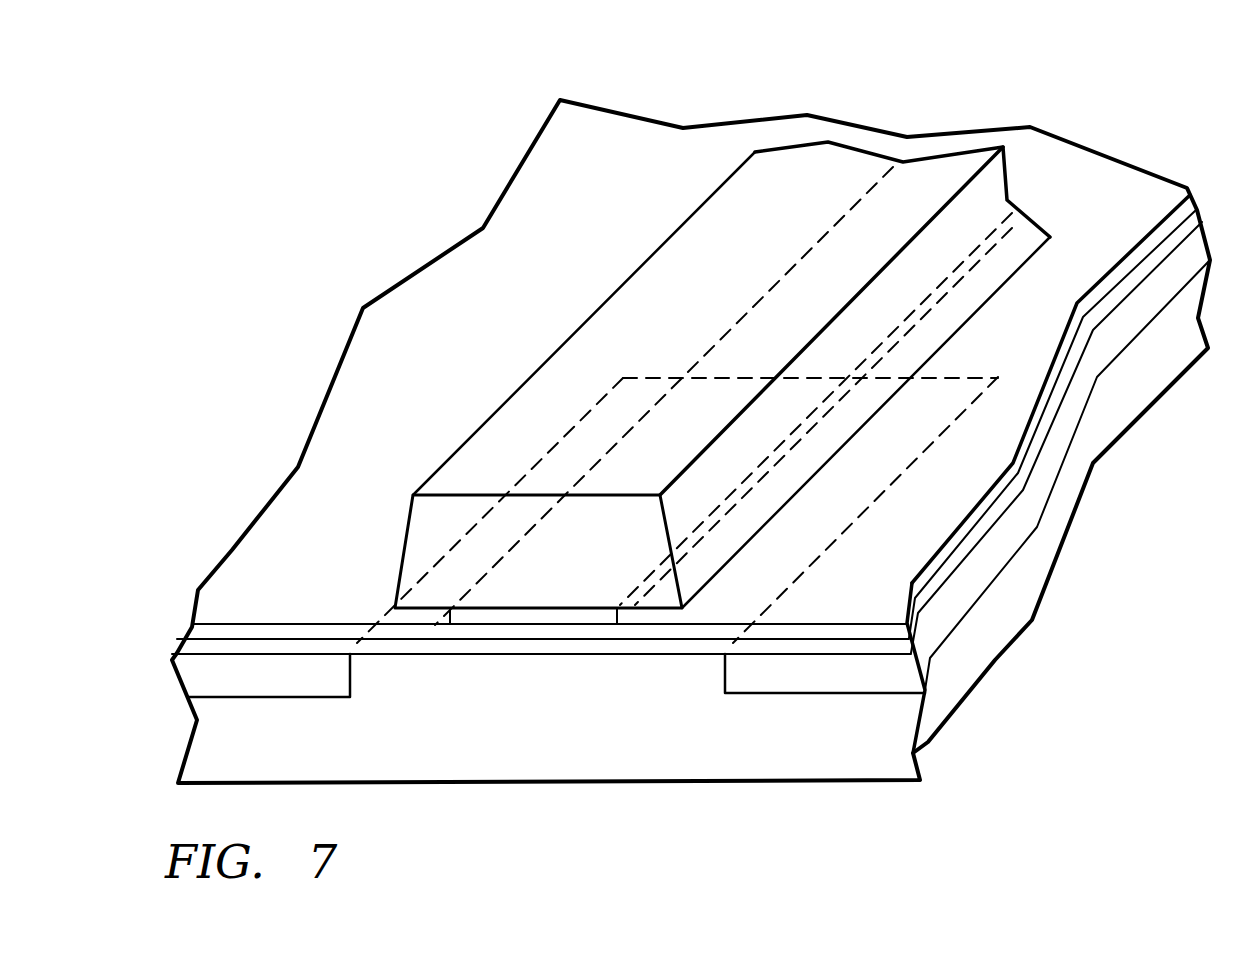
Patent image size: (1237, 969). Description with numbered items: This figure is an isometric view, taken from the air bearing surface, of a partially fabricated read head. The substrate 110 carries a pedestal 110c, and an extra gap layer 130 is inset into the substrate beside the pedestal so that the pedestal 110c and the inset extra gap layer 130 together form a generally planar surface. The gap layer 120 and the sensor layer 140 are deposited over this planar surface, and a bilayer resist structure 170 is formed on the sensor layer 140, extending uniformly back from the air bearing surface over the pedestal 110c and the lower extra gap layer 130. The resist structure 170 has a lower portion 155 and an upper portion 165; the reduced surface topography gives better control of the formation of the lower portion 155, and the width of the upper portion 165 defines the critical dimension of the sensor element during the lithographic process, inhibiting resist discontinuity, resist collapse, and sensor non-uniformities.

The substrate 110 is at (703, 733).
The pedestal 110c is at (590, 668).
The gap layer 120 is at (277, 648).
The extra gap layer 130 is at (820, 673).
The sensor layer 140 is at (347, 637).
The lower portion of the resist structure 155 is at (437, 623).
The upper portion of the resist structure 165 is at (410, 520).
The bilayer resist structure 170 is at (660, 283).